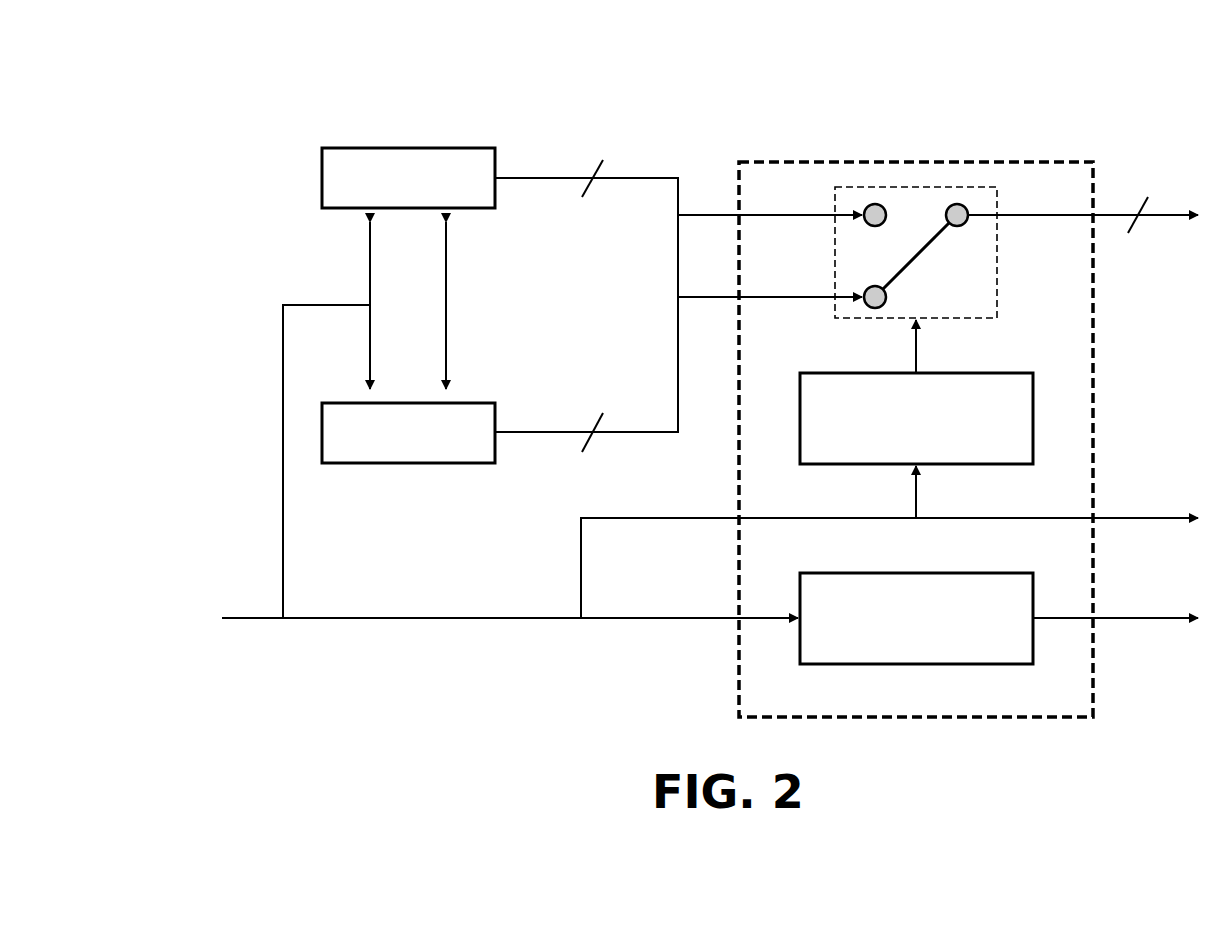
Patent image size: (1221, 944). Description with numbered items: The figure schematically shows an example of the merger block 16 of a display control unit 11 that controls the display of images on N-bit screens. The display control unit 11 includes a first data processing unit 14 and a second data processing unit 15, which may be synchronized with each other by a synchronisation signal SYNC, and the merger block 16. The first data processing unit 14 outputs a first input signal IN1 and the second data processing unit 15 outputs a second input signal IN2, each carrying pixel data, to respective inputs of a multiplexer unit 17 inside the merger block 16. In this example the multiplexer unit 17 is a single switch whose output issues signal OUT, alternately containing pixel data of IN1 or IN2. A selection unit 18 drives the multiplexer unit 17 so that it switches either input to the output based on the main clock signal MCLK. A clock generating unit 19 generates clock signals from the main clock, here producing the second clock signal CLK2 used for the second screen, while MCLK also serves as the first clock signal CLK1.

The display control unit 11 is at (460, 707).
The first data processing unit 14 is at (357, 147).
The second data processing unit 15 is at (357, 465).
The merger block 16 is at (1032, 156).
The multiplexer unit 17 is at (880, 183).
The selection unit 18 is at (1034, 406).
The clock generating unit 19 is at (1034, 642).